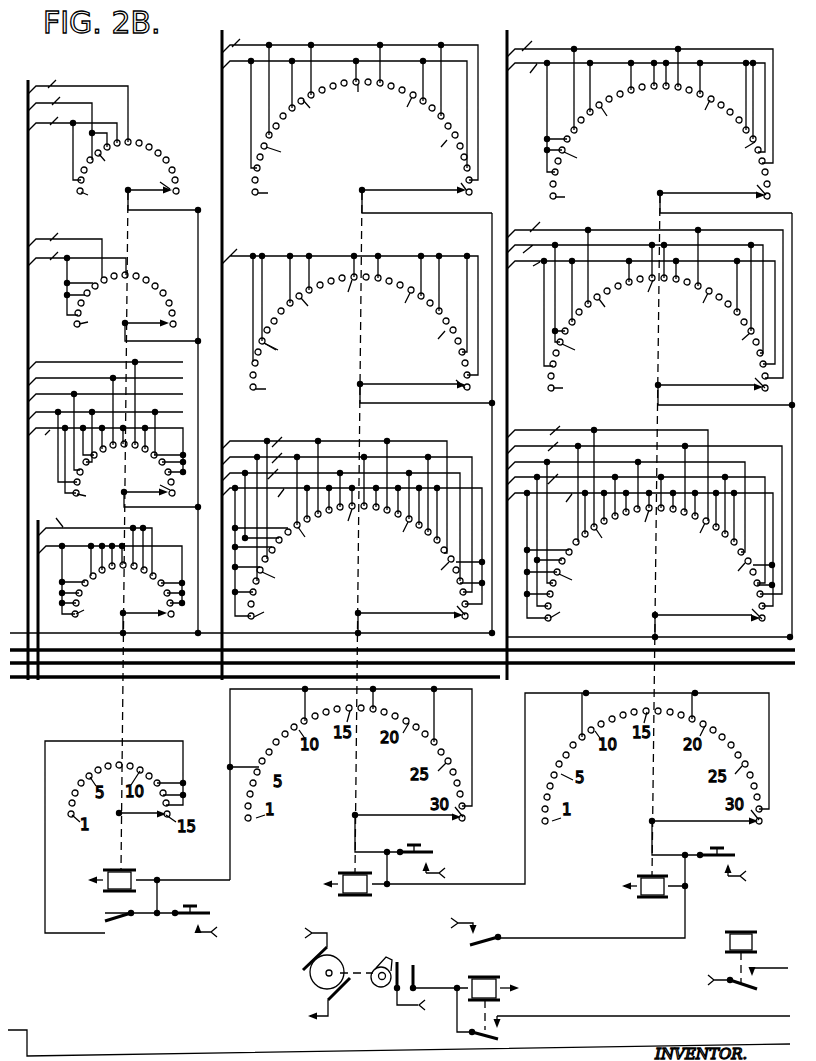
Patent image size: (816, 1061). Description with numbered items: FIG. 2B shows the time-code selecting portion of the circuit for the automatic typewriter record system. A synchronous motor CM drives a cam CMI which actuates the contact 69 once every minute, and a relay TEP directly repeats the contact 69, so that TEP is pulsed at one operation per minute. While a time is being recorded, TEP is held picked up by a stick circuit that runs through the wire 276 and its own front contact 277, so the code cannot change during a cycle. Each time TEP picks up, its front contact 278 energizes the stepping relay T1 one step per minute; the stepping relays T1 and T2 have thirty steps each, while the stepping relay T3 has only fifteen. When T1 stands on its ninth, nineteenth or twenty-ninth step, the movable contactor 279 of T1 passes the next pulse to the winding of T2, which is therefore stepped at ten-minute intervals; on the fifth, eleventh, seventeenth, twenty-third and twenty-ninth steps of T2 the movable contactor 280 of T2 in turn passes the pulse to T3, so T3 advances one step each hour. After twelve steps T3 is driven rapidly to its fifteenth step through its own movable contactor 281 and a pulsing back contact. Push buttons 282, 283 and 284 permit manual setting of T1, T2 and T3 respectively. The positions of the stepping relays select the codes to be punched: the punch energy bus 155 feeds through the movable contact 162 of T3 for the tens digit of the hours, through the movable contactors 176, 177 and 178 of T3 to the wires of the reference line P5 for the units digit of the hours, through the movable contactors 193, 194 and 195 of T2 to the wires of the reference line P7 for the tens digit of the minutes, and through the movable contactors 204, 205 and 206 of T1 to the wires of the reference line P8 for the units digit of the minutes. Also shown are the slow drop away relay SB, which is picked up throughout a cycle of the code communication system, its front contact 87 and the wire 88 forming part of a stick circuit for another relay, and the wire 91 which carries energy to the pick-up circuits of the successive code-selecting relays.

The reference line P5 is at (113, 373).
The reference line P7 is at (357, 351).
The reference line P8 is at (649, 353).
The punch energy bus 155 is at (50, 632).
The movable contactor 178 is at (164, 193).
The movable contactor 177 is at (161, 331).
The movable contactor 176 is at (121, 502).
The movable contact 162 is at (156, 615).
The movable contactor 195 is at (396, 190).
The movable contactor 194 is at (396, 384).
The movable contactor 193 is at (392, 617).
The movable contactor 206 is at (696, 197).
The movable contactor 205 is at (697, 388).
The movable contactor 204 is at (690, 621).
The movable contactor 281 is at (137, 815).
The movable contactor 280 is at (398, 815).
The movable contactor 279 is at (693, 820).
The push button 282 is at (110, 919).
The push button 283 is at (425, 851).
The push button 284 is at (186, 920).
The front contact of relay TEP 278 is at (488, 936).
The front contact of relay TEP 277 is at (476, 1036).
The wire 276 is at (788, 1017).
The stepping relay T1 is at (640, 875).
The stepping relay T2 is at (343, 873).
The stepping relay T3 is at (113, 869).
The synchronous motor CM is at (308, 980).
The cam CMI is at (375, 963).
The contact 69 is at (399, 968).
The relay TEP is at (506, 992).
The slow drop away relay SB is at (743, 930).
The front contact of relay SB 87 is at (733, 988).
The wire 88 is at (770, 967).
The wire 91 is at (14, 1029).